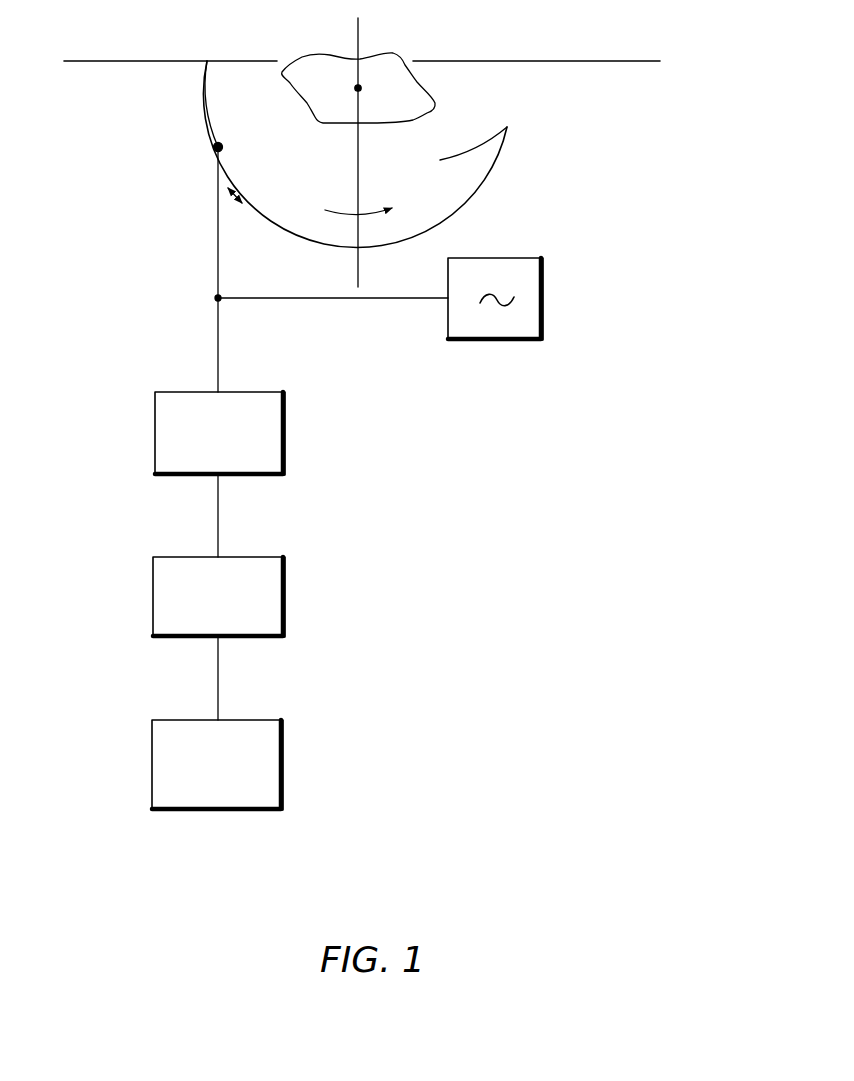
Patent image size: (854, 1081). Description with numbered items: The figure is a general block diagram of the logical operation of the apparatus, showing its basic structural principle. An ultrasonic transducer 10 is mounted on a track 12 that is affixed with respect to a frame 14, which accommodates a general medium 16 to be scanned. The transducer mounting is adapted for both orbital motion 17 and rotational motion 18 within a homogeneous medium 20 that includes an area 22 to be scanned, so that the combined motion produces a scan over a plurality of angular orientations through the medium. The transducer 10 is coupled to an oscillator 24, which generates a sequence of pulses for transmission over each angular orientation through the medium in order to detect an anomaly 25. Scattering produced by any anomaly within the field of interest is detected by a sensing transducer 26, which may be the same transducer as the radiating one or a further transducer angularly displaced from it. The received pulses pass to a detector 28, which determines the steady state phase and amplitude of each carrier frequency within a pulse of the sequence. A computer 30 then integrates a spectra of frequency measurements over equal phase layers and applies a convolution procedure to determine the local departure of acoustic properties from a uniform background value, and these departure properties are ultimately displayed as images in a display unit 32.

The ultrasonic transducer 10 is at (228, 143).
The track 12 is at (301, 228).
The frame 14 is at (135, 59).
The general medium 16 is at (230, 108).
The orbital motion 17 is at (246, 204).
The rotational motion 18 is at (358, 258).
The homogeneous medium 20 is at (468, 153).
The area to be scanned 22 is at (425, 117).
The oscillator 24 is at (543, 312).
The anomaly 25 is at (361, 87).
The sensing transducer 26 is at (214, 149).
The detector 28 is at (285, 437).
The computer 30 is at (285, 603).
The display unit 32 is at (283, 778).